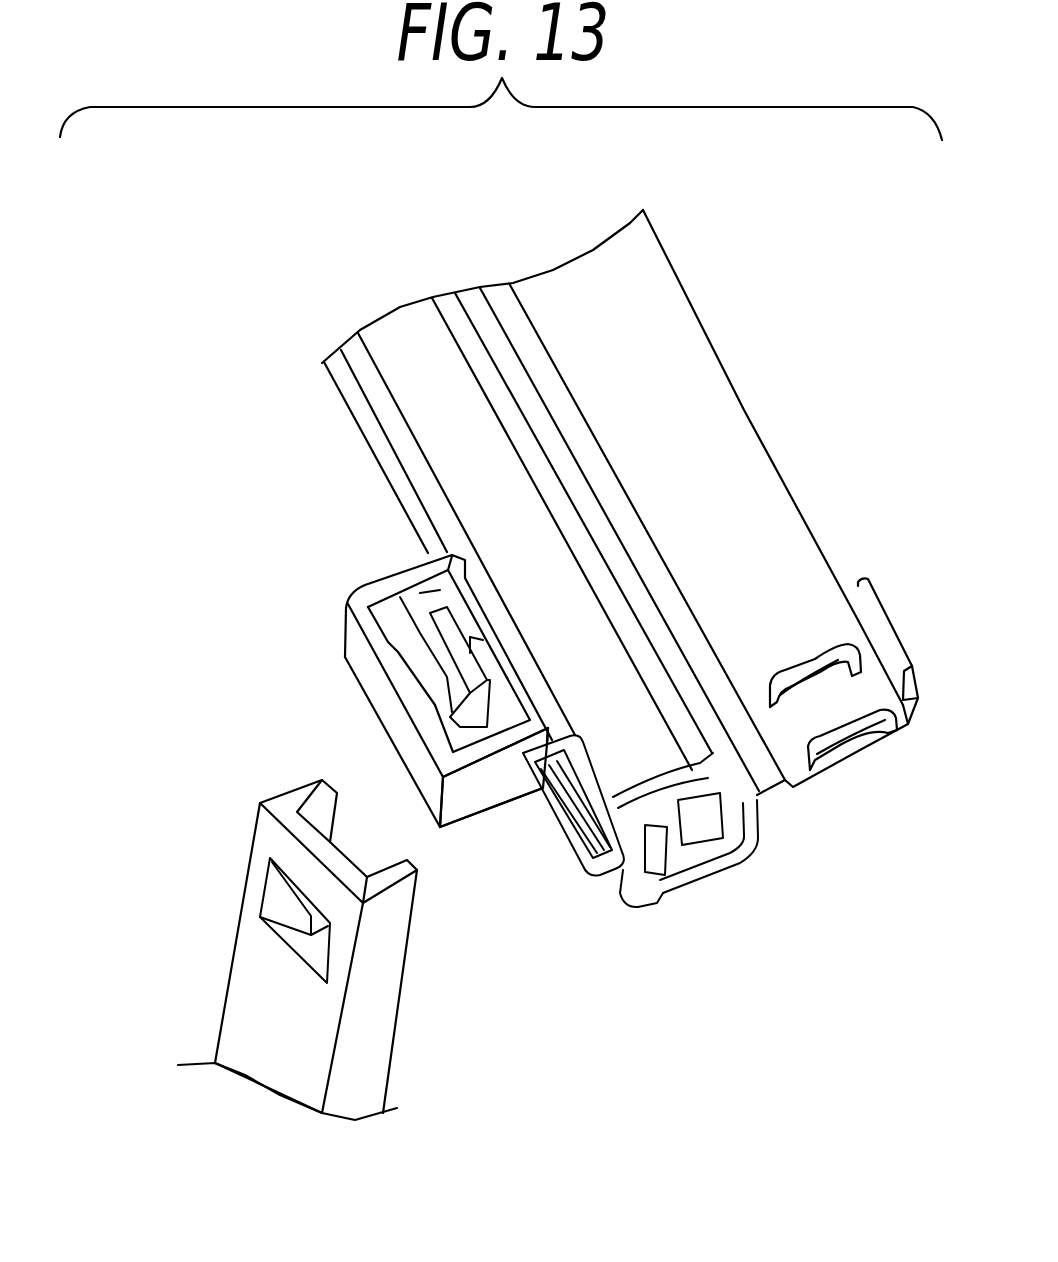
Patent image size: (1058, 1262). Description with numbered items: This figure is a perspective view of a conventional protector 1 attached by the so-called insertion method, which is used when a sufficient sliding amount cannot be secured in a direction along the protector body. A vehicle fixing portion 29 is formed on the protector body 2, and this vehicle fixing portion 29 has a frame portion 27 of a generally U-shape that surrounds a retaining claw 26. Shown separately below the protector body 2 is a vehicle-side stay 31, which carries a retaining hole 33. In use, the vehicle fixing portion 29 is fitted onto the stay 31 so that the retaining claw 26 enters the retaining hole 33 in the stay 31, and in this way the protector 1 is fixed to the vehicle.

The protector 1 is at (824, 337).
The protector body 2 is at (643, 890).
The retaining claw 26 is at (423, 637).
The frame portion 27 is at (428, 786).
The vehicle fixing portion 29 is at (305, 683).
The stay 31 is at (186, 996).
The retaining hole 33 is at (277, 920).